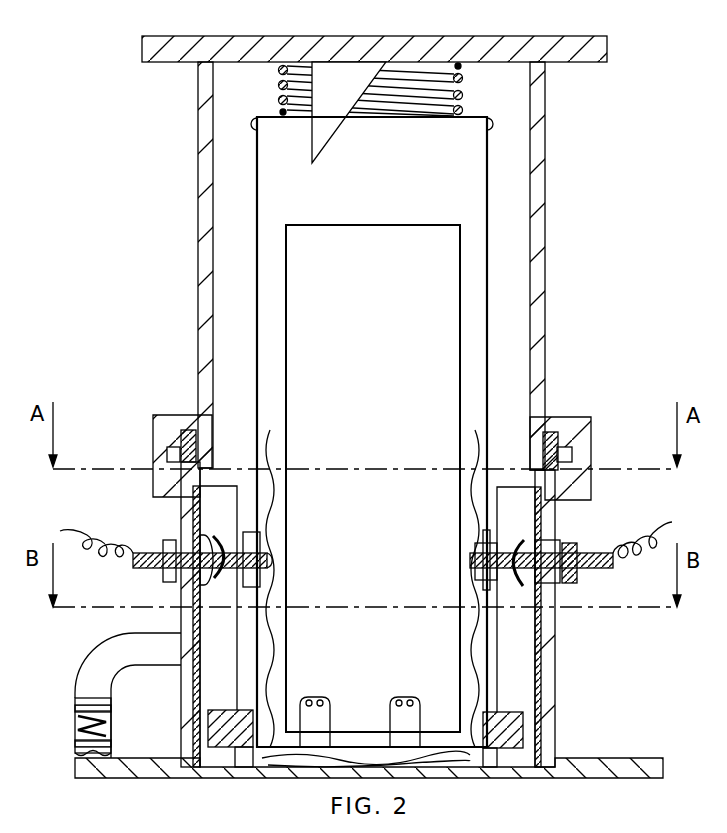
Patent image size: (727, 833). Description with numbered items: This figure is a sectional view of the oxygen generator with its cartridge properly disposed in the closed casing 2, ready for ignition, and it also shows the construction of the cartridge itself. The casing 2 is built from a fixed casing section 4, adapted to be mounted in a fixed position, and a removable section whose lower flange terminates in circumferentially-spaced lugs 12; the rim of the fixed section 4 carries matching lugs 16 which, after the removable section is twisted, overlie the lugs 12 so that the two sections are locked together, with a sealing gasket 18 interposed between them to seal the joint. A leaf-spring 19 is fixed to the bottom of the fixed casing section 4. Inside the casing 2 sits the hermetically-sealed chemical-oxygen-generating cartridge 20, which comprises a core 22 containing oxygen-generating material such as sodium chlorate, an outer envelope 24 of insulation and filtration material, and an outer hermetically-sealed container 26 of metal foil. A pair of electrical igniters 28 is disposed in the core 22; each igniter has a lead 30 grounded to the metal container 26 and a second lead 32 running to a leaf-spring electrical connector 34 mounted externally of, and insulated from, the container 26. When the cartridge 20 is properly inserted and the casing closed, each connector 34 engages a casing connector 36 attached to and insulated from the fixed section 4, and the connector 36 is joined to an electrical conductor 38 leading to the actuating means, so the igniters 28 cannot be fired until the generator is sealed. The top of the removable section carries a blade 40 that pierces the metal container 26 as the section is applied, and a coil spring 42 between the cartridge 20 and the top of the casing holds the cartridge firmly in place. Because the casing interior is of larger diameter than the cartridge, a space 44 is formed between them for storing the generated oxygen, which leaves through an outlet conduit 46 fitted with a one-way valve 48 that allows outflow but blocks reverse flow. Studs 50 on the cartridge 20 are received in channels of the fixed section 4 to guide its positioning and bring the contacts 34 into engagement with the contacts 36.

The casing 2 is at (550, 242).
The fixed casing section 4 is at (550, 654).
The lugs 12 is at (170, 492).
The lugs 16 is at (176, 468).
The sealing gasket 18 is at (193, 430).
The leaf-spring 19 is at (272, 737).
The cartridge 20 is at (492, 154).
The core 22 is at (450, 300).
The outer envelope 24 is at (475, 327).
The outer hermetically-sealed container 26 is at (487, 357).
The electrical igniters 28 is at (420, 700).
The lead 30 is at (435, 745).
The second lead 32 is at (470, 732).
The electrical connector 34 is at (520, 542).
The electrical connector 36 is at (530, 556).
The electrical conductor 38 is at (369, 532).
The blade 40 is at (325, 70).
The coil spring 42 is at (410, 78).
The space 44 is at (515, 210).
The outlet conduit 46 is at (116, 651).
The one-way valve 48 is at (90, 702).
The studs 50 is at (502, 736).